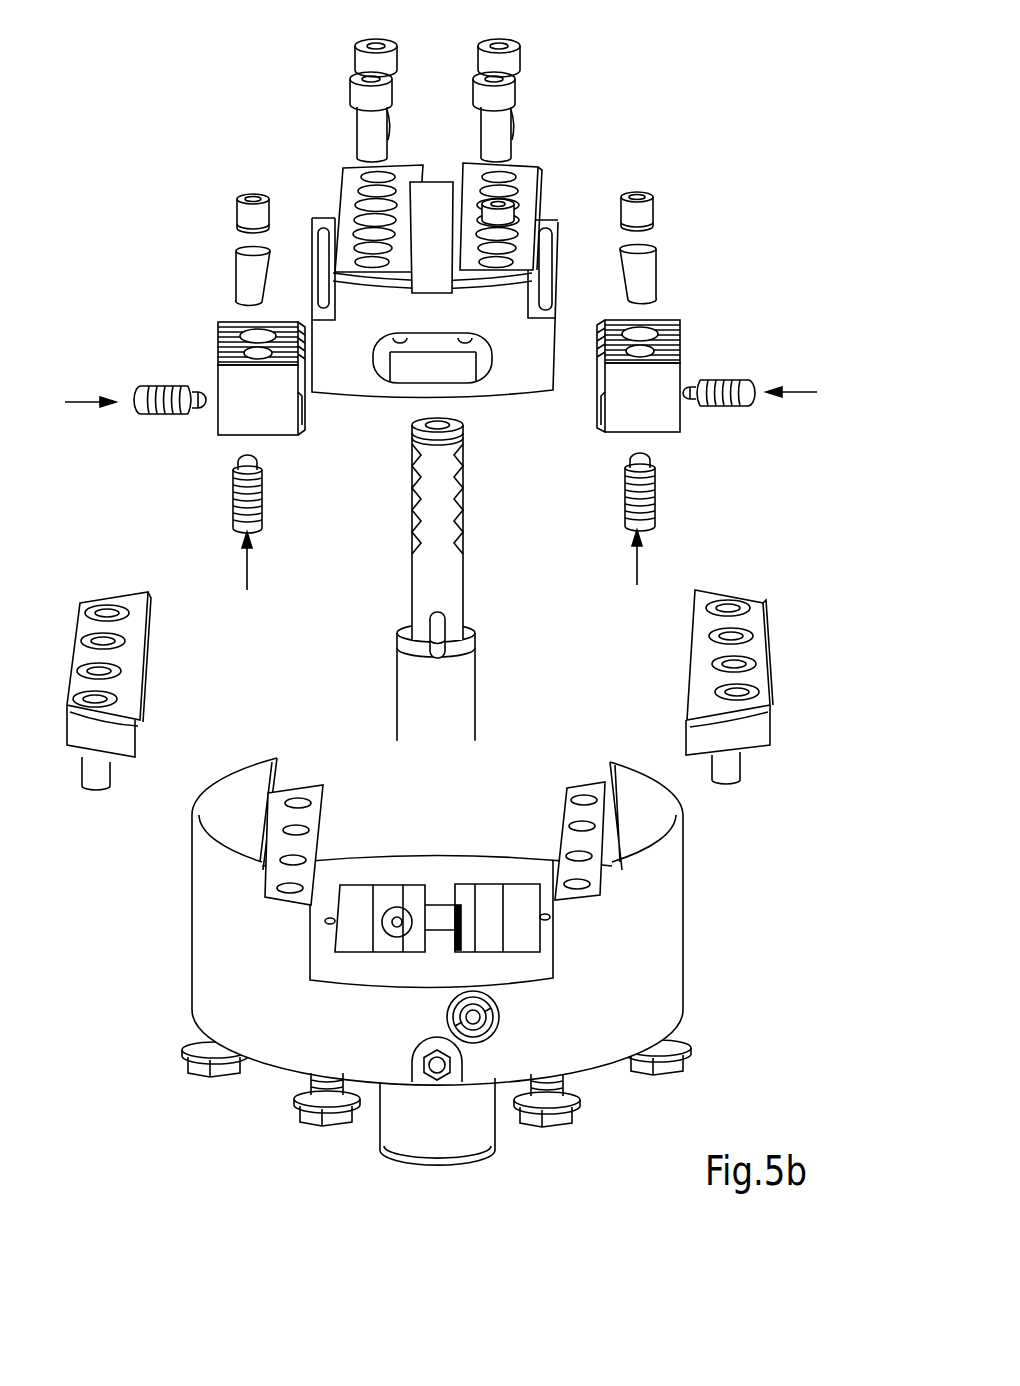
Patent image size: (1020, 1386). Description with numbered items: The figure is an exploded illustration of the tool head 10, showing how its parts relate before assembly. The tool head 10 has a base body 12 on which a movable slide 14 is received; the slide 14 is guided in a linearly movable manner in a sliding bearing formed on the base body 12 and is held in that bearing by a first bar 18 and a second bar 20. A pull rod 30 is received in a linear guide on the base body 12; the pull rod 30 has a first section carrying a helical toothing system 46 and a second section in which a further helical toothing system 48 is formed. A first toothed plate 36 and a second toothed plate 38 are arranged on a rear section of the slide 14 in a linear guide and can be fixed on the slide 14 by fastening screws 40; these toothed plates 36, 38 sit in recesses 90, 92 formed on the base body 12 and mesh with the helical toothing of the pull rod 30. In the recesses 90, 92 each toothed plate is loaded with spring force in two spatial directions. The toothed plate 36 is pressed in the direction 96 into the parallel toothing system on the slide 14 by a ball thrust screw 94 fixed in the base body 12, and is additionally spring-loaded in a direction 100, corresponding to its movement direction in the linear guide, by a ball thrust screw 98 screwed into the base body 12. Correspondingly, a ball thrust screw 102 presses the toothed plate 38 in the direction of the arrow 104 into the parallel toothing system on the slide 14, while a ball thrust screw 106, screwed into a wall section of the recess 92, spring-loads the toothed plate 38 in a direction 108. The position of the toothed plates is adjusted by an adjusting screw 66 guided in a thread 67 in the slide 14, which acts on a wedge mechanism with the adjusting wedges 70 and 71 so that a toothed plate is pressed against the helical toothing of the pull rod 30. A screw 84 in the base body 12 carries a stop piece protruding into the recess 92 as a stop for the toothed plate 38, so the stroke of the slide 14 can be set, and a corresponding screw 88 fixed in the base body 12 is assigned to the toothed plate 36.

The tool head 10 is at (441, 625).
The base body 12 is at (454, 952).
The slide 14 is at (440, 195).
The first bar 18 is at (128, 668).
The second bar 20 is at (752, 656).
The pull rod 30 is at (456, 700).
The first toothed plate 36 is at (230, 430).
The second toothed plate 38 is at (660, 430).
The fastening screws 40 is at (498, 118).
The helical toothing system 46 is at (400, 522).
The helical toothing system 48 is at (472, 490).
The adjusting screw 66 is at (641, 214).
The thread 67 is at (242, 217).
The adjusting wedge 70 is at (645, 276).
The adjusting wedge 71 is at (242, 277).
The screw 84 is at (480, 1016).
The screw 88 is at (398, 907).
The recess 90 is at (364, 888).
The recess 92 is at (520, 886).
The ball thrust screw 94 is at (258, 512).
The direction 96 is at (248, 570).
The ball thrust screw 98 is at (165, 385).
The direction 100 is at (88, 402).
The ball thrust screw 102 is at (650, 508).
The arrow 104 is at (640, 565).
The ball thrust screw 106 is at (725, 380).
The direction 108 is at (800, 392).